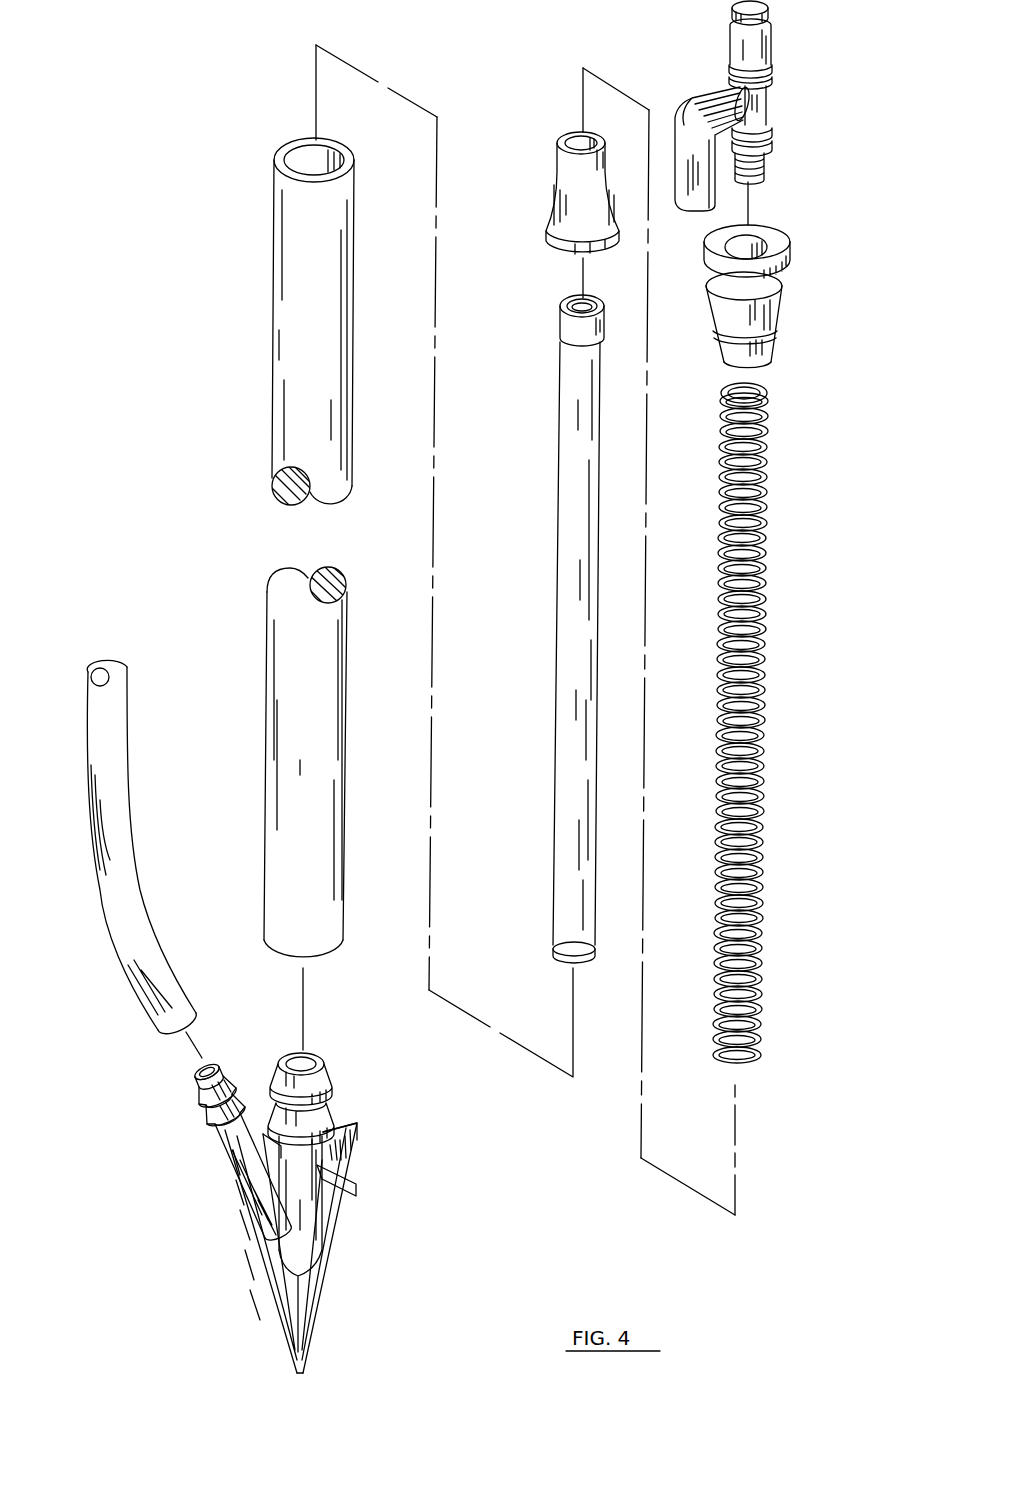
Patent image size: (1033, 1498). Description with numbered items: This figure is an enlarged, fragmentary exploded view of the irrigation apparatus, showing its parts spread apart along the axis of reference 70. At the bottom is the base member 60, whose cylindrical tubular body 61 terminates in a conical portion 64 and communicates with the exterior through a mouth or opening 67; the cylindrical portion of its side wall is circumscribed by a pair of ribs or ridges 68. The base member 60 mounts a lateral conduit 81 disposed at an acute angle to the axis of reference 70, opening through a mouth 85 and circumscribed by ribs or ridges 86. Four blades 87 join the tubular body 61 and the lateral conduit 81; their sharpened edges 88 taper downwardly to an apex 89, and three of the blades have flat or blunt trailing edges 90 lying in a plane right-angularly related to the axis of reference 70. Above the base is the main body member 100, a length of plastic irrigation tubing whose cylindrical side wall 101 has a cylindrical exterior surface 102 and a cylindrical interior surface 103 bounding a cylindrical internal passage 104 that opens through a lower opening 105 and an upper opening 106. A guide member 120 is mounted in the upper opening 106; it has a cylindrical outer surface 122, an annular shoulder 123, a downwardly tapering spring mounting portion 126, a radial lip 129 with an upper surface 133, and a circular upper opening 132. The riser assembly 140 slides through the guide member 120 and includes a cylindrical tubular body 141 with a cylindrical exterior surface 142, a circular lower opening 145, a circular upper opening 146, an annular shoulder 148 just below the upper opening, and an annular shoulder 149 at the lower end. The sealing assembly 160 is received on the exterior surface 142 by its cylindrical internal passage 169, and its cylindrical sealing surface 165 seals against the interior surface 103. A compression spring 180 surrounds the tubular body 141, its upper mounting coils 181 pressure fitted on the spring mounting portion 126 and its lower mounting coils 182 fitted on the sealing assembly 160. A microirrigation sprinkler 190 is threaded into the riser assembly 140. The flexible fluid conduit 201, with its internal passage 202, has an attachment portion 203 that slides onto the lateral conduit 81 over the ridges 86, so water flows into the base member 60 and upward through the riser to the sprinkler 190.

The base member 60 is at (279, 1192).
The cylindrical tubular body 61 is at (312, 1150).
The conical portion 64 is at (300, 1258).
The mouth or opening 67 is at (331, 1058).
The ribs or ridges 68 is at (333, 1082).
The axis of reference 70 is at (750, 195).
The lateral conduit 81 is at (221, 1125).
The mouth 85 is at (205, 1062).
The ribs or ridges 86 is at (215, 1122).
The blades 87 is at (328, 1210).
The sharpened edges 88 is at (330, 1290).
The apex 89 is at (310, 1370).
The trailing edges 90 is at (270, 1130).
The main body member 100 is at (250, 474).
The cylindrical side wall 101 is at (314, 298).
The cylindrical exterior surface 102 is at (315, 526).
The cylindrical interior surface 103 is at (345, 583).
The cylindrical internal passage 104 is at (338, 574).
The lower opening 105 is at (315, 748).
The upper opening 106 is at (305, 150).
The guide member 120 is at (769, 280).
The cylindrical outer surface 122 is at (735, 286).
The annular shoulder 123 is at (785, 305).
The spring mounting portion 126 is at (775, 340).
The radial lip 129 is at (795, 240).
The circular upper opening 132 is at (728, 240).
The upper surface 133 is at (775, 233).
The riser assembly 140 is at (543, 630).
The cylindrical tubular body 141 is at (575, 665).
The cylindrical exterior surface 142 is at (580, 466).
The circular lower opening 145 is at (560, 958).
The circular upper opening 146 is at (572, 300).
The annular shoulder 148 is at (558, 331).
The annular shoulder 149 is at (558, 944).
The sealing assembly 160 is at (548, 175).
The cylindrical sealing surface 165 is at (552, 237).
The cylindrical internal passage 169 is at (578, 140).
The compression spring 180 is at (784, 722).
The upper mounting coils 181 is at (770, 393).
The lower mounting coils 182 is at (762, 1037).
The microirrigation sprinkler 190 is at (772, 108).
The flexible fluid conduit 201 is at (130, 839).
The internal passage 202 is at (100, 668).
The attachment portion 203 is at (148, 1010).